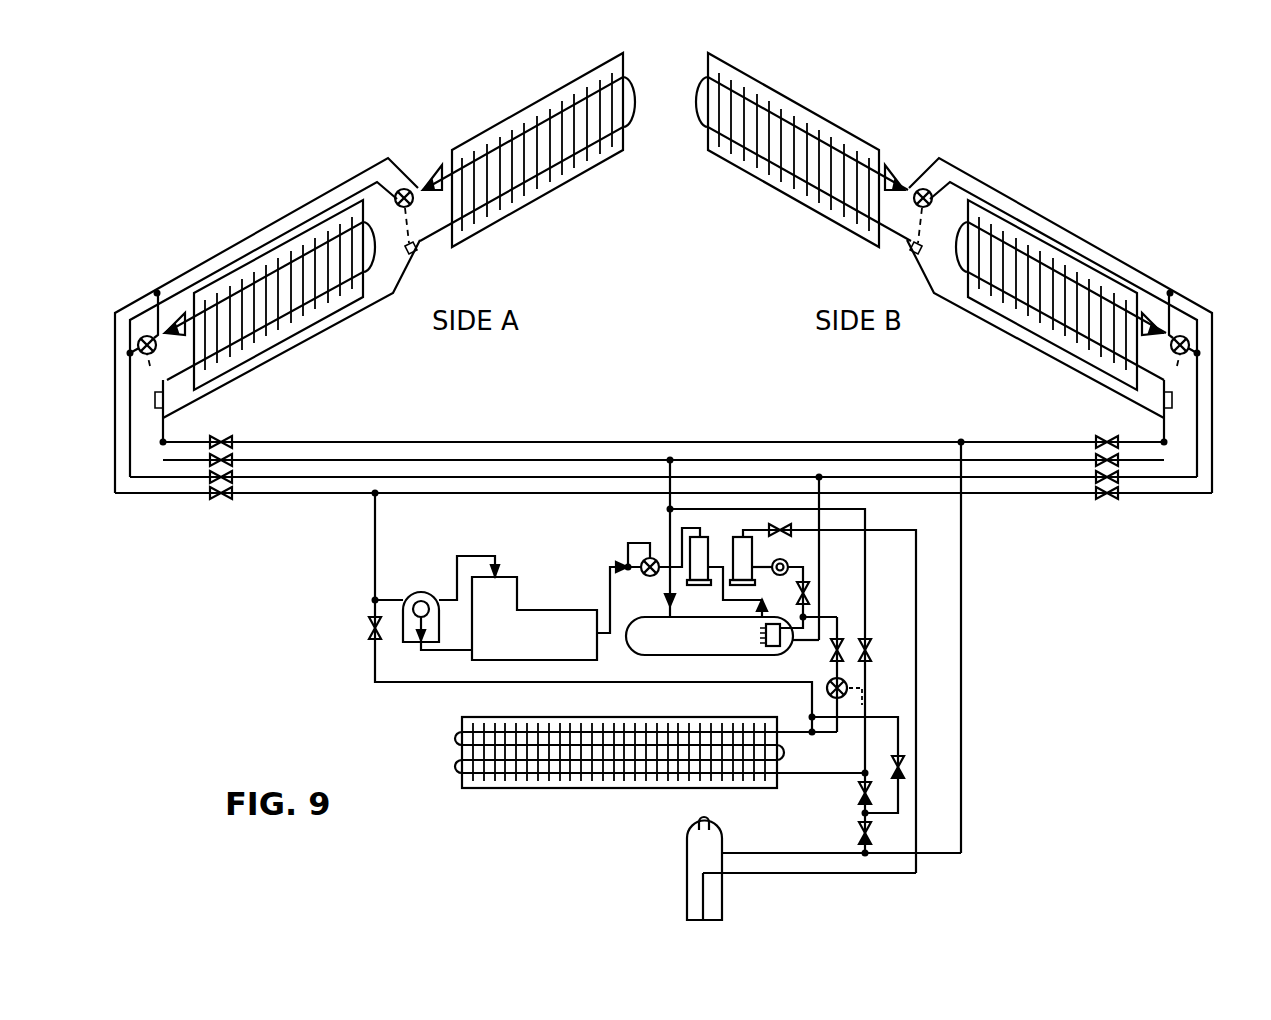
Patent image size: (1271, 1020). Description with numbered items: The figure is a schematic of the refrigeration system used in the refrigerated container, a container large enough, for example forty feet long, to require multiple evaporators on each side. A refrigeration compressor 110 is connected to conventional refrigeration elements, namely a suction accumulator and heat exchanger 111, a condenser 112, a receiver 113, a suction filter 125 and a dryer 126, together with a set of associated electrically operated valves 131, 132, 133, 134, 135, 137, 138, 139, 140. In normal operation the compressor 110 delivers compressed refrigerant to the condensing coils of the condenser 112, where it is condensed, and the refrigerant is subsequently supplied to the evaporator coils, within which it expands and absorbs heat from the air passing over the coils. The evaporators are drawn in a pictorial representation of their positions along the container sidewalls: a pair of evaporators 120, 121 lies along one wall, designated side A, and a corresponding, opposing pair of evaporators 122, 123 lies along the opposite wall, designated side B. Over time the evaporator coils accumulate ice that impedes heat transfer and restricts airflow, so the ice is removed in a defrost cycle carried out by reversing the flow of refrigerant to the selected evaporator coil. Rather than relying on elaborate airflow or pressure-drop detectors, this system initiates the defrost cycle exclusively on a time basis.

The refrigeration compressor 110 is at (552, 615).
The suction accumulator and heat exchanger 111 is at (665, 652).
The condenser 112 is at (623, 775).
The receiver 113 is at (724, 899).
The evaporator 120 is at (287, 315).
The evaporator 121 is at (493, 198).
The evaporator 122 is at (810, 188).
The evaporator 123 is at (1018, 300).
The suction filter 125 is at (698, 547).
The dryer 126 is at (748, 552).
The electrically operated valve 131 is at (233, 478).
The electrically operated valve 132 is at (1115, 478).
The electrically operated valve 133 is at (230, 458).
The electrically operated valve 134 is at (1098, 446).
The electrically operated valve 135 is at (221, 498).
The electrically operated valve 137 is at (1100, 498).
The electrically operated valve 138 is at (370, 630).
The electrically operated valve 139 is at (842, 640).
The electrically operated valve 140 is at (868, 645).